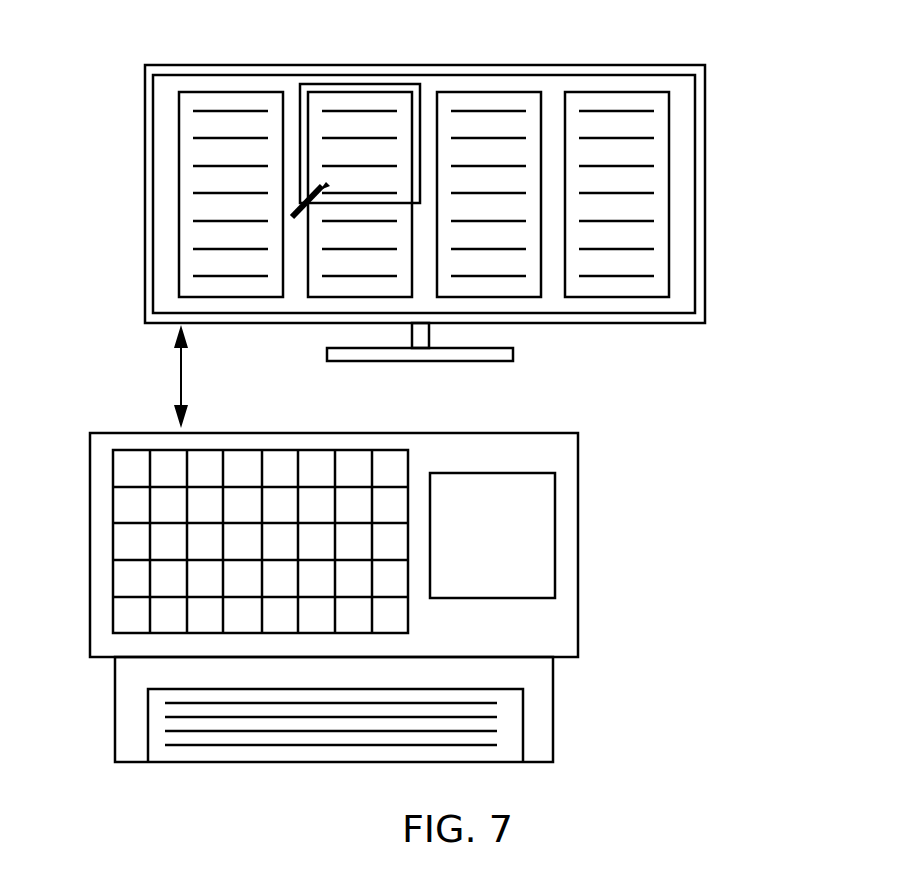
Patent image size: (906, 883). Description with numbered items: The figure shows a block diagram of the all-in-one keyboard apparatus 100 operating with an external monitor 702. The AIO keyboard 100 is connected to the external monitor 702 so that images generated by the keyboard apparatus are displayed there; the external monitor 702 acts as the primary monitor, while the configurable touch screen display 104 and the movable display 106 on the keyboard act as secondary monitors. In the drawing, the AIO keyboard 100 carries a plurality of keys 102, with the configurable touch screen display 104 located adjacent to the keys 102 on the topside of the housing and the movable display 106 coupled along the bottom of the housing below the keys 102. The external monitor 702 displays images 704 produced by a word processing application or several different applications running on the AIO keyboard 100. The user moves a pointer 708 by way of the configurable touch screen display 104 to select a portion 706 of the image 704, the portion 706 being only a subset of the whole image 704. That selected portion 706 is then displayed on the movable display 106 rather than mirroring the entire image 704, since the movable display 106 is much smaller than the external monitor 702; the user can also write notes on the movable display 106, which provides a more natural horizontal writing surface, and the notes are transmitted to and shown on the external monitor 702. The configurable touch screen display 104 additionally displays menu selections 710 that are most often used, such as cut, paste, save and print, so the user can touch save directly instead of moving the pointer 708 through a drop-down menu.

The all-in-one keyboard apparatus 100 is at (587, 435).
The plurality of keys 102 is at (312, 450).
The configurable touch screen display 104 is at (495, 473).
The movable display 106 is at (553, 703).
The external monitor 702 is at (705, 120).
The image 704 is at (163, 223).
The portion of the image 706 is at (365, 84).
The pointer 708 is at (292, 218).
The menu items 710 is at (545, 537).